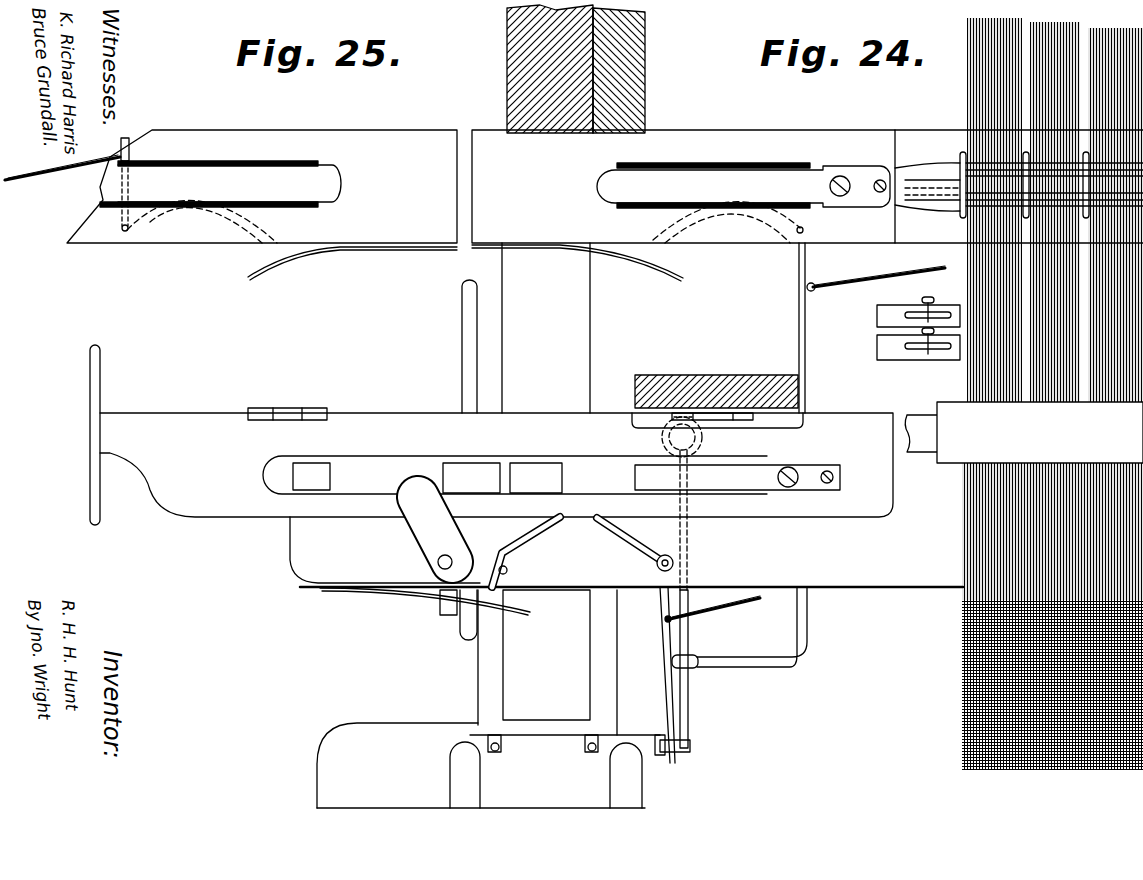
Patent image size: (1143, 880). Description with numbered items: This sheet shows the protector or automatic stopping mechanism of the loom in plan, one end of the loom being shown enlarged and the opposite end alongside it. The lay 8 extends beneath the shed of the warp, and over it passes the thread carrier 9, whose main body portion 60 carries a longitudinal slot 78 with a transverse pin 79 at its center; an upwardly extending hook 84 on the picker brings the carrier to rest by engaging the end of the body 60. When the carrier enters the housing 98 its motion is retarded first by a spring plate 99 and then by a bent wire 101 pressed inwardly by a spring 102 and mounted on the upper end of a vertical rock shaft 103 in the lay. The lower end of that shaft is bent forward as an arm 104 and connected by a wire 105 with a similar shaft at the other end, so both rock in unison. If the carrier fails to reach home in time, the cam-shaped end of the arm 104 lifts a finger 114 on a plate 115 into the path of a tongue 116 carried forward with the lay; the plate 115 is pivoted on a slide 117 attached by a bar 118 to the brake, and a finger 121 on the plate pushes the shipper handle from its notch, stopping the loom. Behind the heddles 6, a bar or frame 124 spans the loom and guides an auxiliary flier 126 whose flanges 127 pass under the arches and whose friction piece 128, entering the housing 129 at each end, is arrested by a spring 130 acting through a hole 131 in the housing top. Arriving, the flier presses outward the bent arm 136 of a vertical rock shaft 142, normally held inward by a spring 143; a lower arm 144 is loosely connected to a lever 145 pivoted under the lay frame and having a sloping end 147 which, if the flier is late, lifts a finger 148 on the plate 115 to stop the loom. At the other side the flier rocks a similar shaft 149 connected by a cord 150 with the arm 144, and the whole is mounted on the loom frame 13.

In FIG. 24, the heddles 6 is at (945, 350).
In FIG. 24, the lay 8 is at (923, 565).
In FIG. 24, the thread carrier 9 is at (578, 472).
In FIG. 24, the frame 13 is at (573, 350).
In FIG. 24, the main body portion 60 is at (348, 467).
In FIG. 24, the longitudinal slot 78 is at (443, 480).
In FIG. 24, the transverse pin 79 is at (500, 480).
In FIG. 24, the hook 84 is at (293, 470).
In FIG. 24, the housing 98 is at (392, 422).
In FIG. 24, the spring plate 99 is at (748, 478).
In FIG. 24, the bent wire 101 is at (612, 527).
In FIG. 24, the spring 102 is at (427, 593).
In FIG. 24, the vertical rock shaft 103 is at (675, 563).
In FIG. 24, the forwardly projecting arm 104 is at (658, 597).
In FIG. 24, the wire 105 is at (742, 603).
In FIG. 24, the finger 114 is at (637, 735).
In FIG. 24, the plate 115 is at (493, 770).
In FIG. 24, the tongue 116 is at (520, 660).
In FIG. 24, the slide 117 is at (432, 730).
In FIG. 24, the bar 118 is at (468, 358).
In FIG. 24, the finger 121 is at (330, 797).
In FIG. 24, the bar or frame 124 is at (960, 140).
In FIG. 24, the auxiliary flier 126 is at (908, 198).
In FIG. 24, the flanges 127 is at (925, 170).
In FIG. 24, the friction piece 128 is at (967, 215).
In FIG. 25, the housing 129 is at (372, 143).
In FIG. 24, the housing 129 is at (750, 137).
In FIG. 25, the spring 130 is at (183, 177).
In FIG. 24, the spring 130 is at (677, 177).
In FIG. 25, the hole 131 is at (248, 165).
In FIG. 24, the hole 131 is at (775, 163).
In FIG. 25, the bent arm 136 is at (250, 230).
In FIG. 24, the bent arm 136 is at (657, 247).
In FIG. 24, the vertical rock shaft 142 is at (798, 233).
In FIG. 25, the spring 143 is at (320, 252).
In FIG. 24, the spring 143 is at (650, 267).
In FIG. 24, the lower arm 144 is at (798, 357).
In FIG. 24, the lever 145 is at (690, 692).
In FIG. 24, the sloping end 147 is at (683, 733).
In FIG. 24, the finger 148 is at (683, 747).
In FIG. 25, the shaft 149 is at (125, 232).
In FIG. 25, the cord 150 is at (62, 185).
In FIG. 24, the cord 150 is at (867, 282).